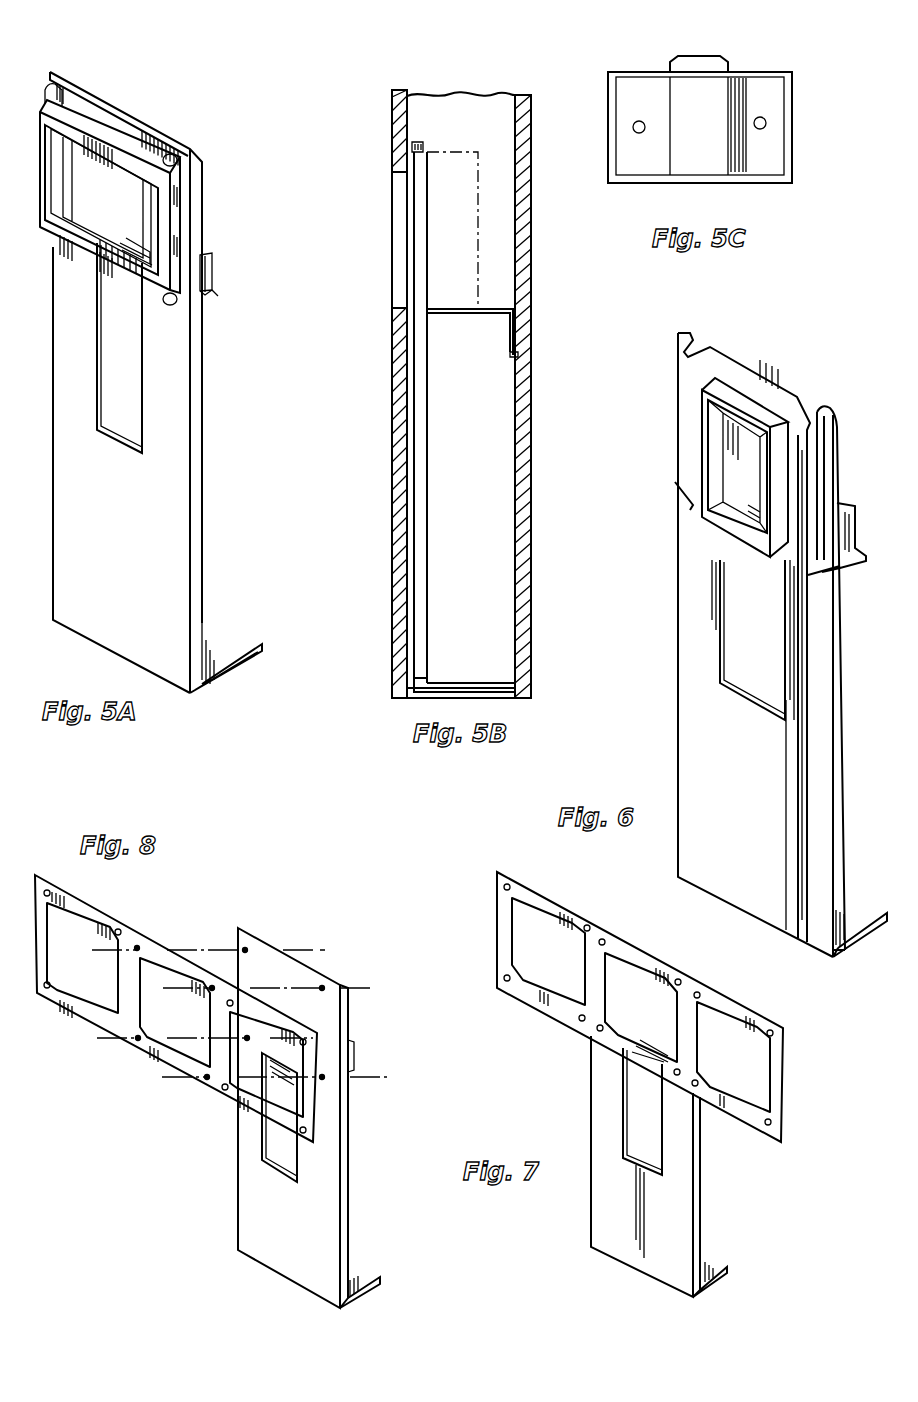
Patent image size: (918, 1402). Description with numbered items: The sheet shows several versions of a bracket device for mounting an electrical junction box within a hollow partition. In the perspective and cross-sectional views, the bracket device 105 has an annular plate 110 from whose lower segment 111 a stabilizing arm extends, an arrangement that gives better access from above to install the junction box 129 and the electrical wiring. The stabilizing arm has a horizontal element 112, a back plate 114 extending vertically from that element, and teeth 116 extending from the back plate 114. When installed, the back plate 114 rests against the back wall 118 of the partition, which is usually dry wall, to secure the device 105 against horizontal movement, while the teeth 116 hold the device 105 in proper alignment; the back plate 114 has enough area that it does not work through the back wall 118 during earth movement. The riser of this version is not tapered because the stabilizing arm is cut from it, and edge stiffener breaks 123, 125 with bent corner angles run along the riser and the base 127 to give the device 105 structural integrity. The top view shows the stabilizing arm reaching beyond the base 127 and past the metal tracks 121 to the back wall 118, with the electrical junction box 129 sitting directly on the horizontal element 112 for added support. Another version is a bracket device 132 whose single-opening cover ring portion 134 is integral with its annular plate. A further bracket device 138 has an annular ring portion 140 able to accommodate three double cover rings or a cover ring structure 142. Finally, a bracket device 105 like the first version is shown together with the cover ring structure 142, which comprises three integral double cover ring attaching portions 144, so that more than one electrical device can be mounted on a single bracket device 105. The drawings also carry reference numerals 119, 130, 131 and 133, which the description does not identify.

In FIG. 5A, the bracket device 105 is at (207, 150).
In FIG. 5B, the bracket device 105 is at (432, 444).
In FIG. 5C, the bracket device 105 is at (806, 70).
In FIG. 8, the bracket device 105 is at (280, 926).
In FIG. 5A, the annular plate 110 is at (208, 226).
In FIG. 5B, the annular plate 110 is at (424, 142).
In FIG. 8, the annular plate 110 is at (342, 985).
In FIG. 5A, the lower segment 111 is at (79, 205).
In FIG. 8, the lower segment 111 is at (287, 1068).
In FIG. 5A, the horizontal element 112 is at (120, 240).
In FIG. 5B, the horizontal element 112 is at (449, 318).
In FIG. 5C, the horizontal element 112 is at (735, 150).
In FIG. 5A, the back plate 114 is at (216, 277).
In FIG. 5B, the back plate 114 is at (518, 322).
In FIG. 5A, the teeth 116 is at (212, 298).
In FIG. 5B, the teeth 116 is at (520, 347).
In FIG. 5C, the teeth 116 is at (697, 56).
In FIG. 5B, the back wall 118 is at (532, 368).
In FIG. 5A, the flange 119 is at (150, 246).
In FIG. 5C, the flange 119 is at (684, 103).
In FIG. 8, the flange 119 is at (355, 1058).
In FIG. 5B, the metal tracks 121 is at (530, 696).
In FIG. 5A, the edge stiffener break 123 is at (200, 418).
In FIG. 5B, the edge stiffener break 123 is at (428, 596).
In FIG. 5A, the edge stiffener break 125 is at (238, 674).
In FIG. 5B, the edge stiffener break 125 is at (465, 682).
In FIG. 5A, the base 127 is at (218, 635).
In FIG. 5C, the base 127 is at (746, 80).
In FIG. 8, the base 127 is at (355, 1275).
In FIG. 5B, the electrical junction box 129 is at (451, 152).
In FIG. 6, the clip bracket 130 is at (822, 458).
In FIG. 5A, the panel body 131 is at (178, 512).
In FIG. 5B, the panel body 131 is at (433, 540).
In FIG. 8, the panel body 131 is at (246, 1205).
In FIG. 6, the bracket device 132 is at (790, 382).
In FIG. 5B, the side wall 133 is at (394, 378).
In FIG. 6, the cover ring portion 134 is at (720, 466).
In FIG. 7, the bracket device 138 is at (726, 1158).
In FIG. 7, the annular ring portion 140 is at (690, 985).
In FIG. 8, the cover ring structure 142 is at (175, 936).
In FIG. 8, the double cover ring attaching portion 144 is at (120, 1050).